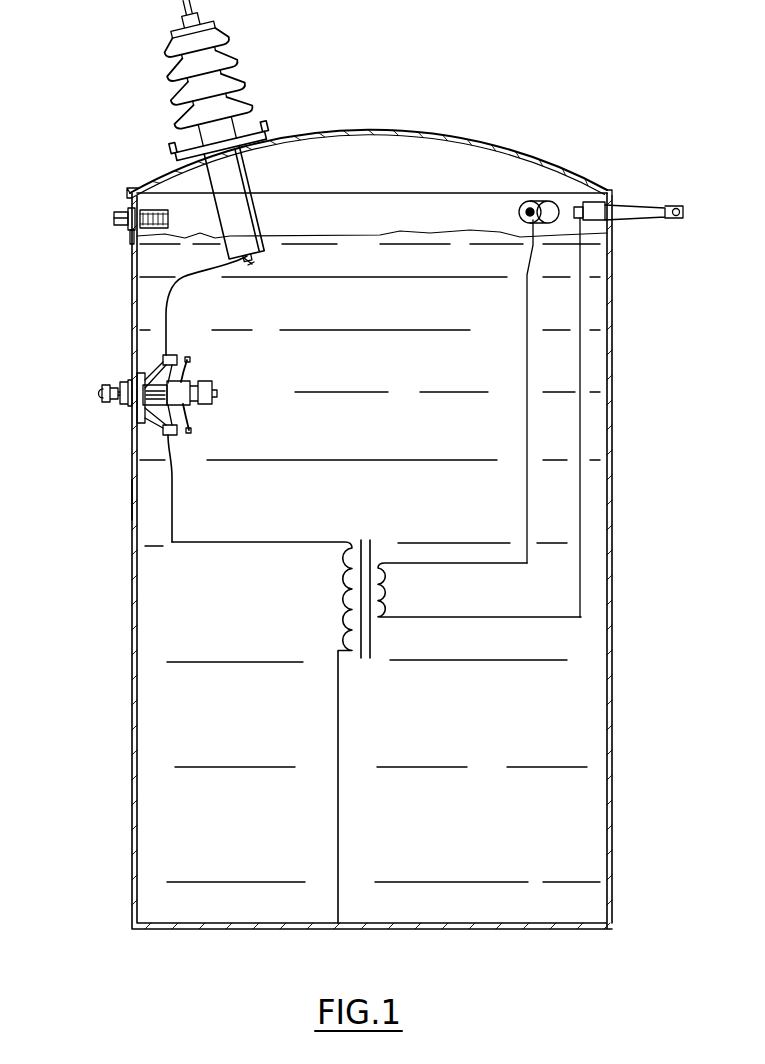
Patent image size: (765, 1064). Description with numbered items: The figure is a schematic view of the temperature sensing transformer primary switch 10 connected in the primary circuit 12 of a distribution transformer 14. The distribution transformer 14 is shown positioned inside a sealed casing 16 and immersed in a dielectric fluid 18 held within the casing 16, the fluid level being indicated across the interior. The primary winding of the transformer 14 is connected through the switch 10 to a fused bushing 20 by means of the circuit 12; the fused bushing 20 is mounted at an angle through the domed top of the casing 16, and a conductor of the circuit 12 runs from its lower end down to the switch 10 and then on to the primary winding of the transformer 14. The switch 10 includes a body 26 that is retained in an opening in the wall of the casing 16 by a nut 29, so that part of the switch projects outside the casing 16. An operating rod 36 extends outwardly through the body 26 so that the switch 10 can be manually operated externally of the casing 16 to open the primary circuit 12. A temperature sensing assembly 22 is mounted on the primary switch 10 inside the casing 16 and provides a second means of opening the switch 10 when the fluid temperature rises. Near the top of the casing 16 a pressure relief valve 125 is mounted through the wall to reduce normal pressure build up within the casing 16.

The temperature sensing transformer primary switch 10 is at (186, 349).
The primary circuit 12 is at (174, 513).
The distribution transformer 14 is at (377, 543).
The sealed casing 16 is at (131, 492).
The dielectric fluid 18 is at (588, 637).
The fused bushing 20 is at (258, 62).
The temperature sensing assembly 22 is at (208, 383).
The body 26 is at (148, 418).
The nut 29 is at (127, 381).
The operating rod 36 is at (100, 401).
The pressure relief valve 125 is at (118, 232).